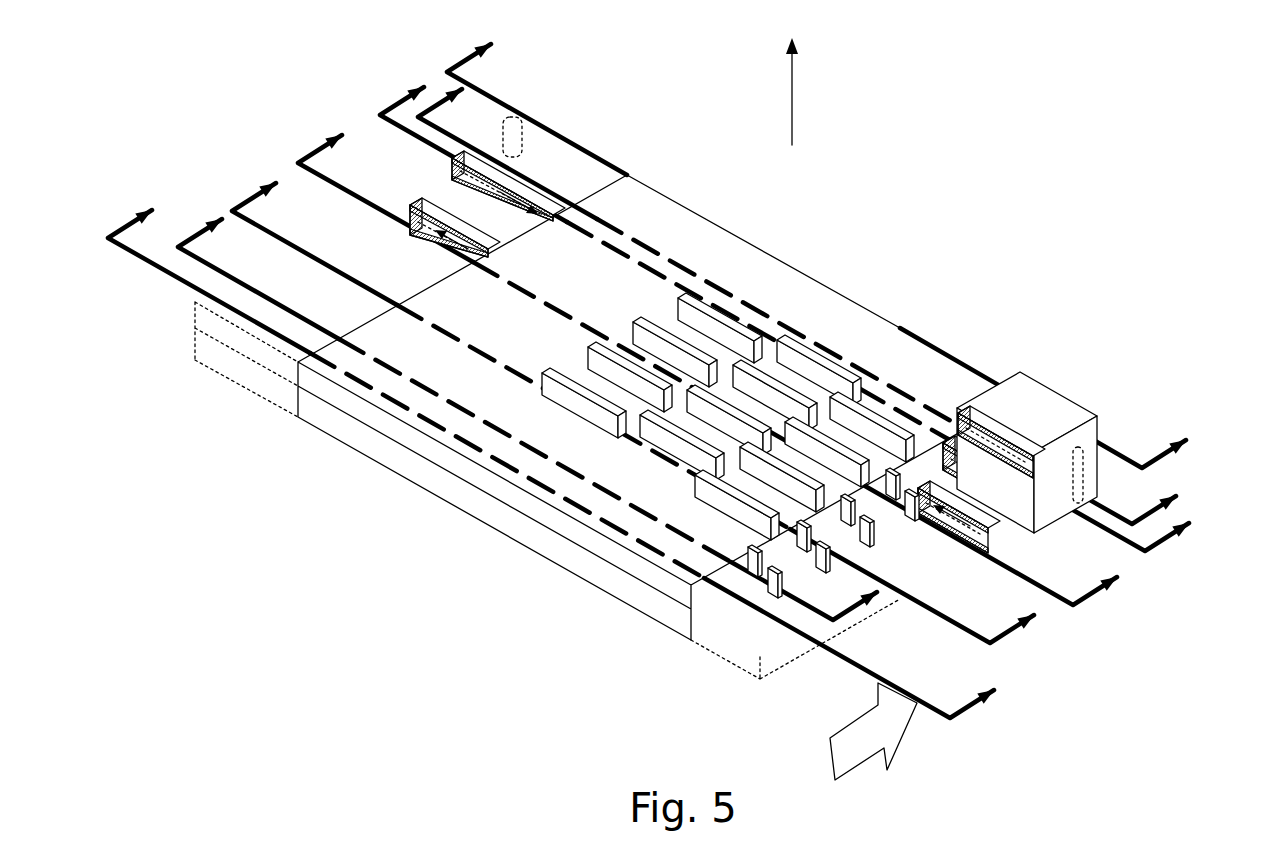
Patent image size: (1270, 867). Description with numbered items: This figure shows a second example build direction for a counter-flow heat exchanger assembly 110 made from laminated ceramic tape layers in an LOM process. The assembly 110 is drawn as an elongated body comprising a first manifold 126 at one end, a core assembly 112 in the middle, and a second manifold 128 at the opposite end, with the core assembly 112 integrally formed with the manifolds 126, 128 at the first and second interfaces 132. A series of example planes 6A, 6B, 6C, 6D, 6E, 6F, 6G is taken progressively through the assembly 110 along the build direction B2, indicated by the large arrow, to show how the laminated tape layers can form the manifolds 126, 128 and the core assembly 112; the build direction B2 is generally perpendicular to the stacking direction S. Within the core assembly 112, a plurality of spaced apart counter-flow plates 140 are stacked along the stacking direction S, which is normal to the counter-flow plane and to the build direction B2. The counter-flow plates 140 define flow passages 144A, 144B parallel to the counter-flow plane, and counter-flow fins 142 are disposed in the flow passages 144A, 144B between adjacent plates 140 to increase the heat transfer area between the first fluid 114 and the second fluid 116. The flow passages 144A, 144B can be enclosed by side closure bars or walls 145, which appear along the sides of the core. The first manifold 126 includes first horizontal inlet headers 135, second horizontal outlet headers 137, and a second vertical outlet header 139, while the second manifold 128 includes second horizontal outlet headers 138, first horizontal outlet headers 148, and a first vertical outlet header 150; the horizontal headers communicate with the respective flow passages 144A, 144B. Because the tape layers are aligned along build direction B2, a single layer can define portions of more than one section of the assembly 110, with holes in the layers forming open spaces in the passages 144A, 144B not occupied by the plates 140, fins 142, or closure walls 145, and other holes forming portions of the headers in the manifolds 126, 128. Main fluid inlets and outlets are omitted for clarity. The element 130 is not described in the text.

The heat exchanger assembly 110 is at (960, 170).
The core assembly 112 is at (824, 244).
The first fluid 114 is at (425, 240).
The second fluid 116 is at (548, 185).
The first manifold 126 is at (1047, 376).
The second manifold 128 is at (490, 86).
The lower plate 130 is at (688, 650).
The first and second interfaces 132 is at (370, 325).
The first horizontal inlet headers 135 is at (987, 553).
The second horizontal outlet headers 137 is at (1017, 497).
The second horizontal outlet headers 138 is at (565, 212).
The second vertical outlet header 139 is at (1088, 472).
The counter-flow plates 140 is at (823, 334).
The counter-flow fins 142 is at (682, 457).
The flow passage 144A is at (738, 545).
The flow passage 144B is at (689, 612).
The side closure bars or walls 145 is at (888, 322).
The first horizontal outlet headers 148 is at (473, 252).
The first vertical outlet header 150 is at (522, 132).
The example plane 6A is at (122, 233).
The example plane 6B is at (190, 243).
The example plane 6C is at (253, 212).
The example plane 6D is at (310, 157).
The example plane 6E is at (392, 110).
The example plane 6F is at (435, 103).
The example plane 6G is at (447, 72).
The stacking direction S is at (792, 87).
The build direction B2 is at (905, 737).